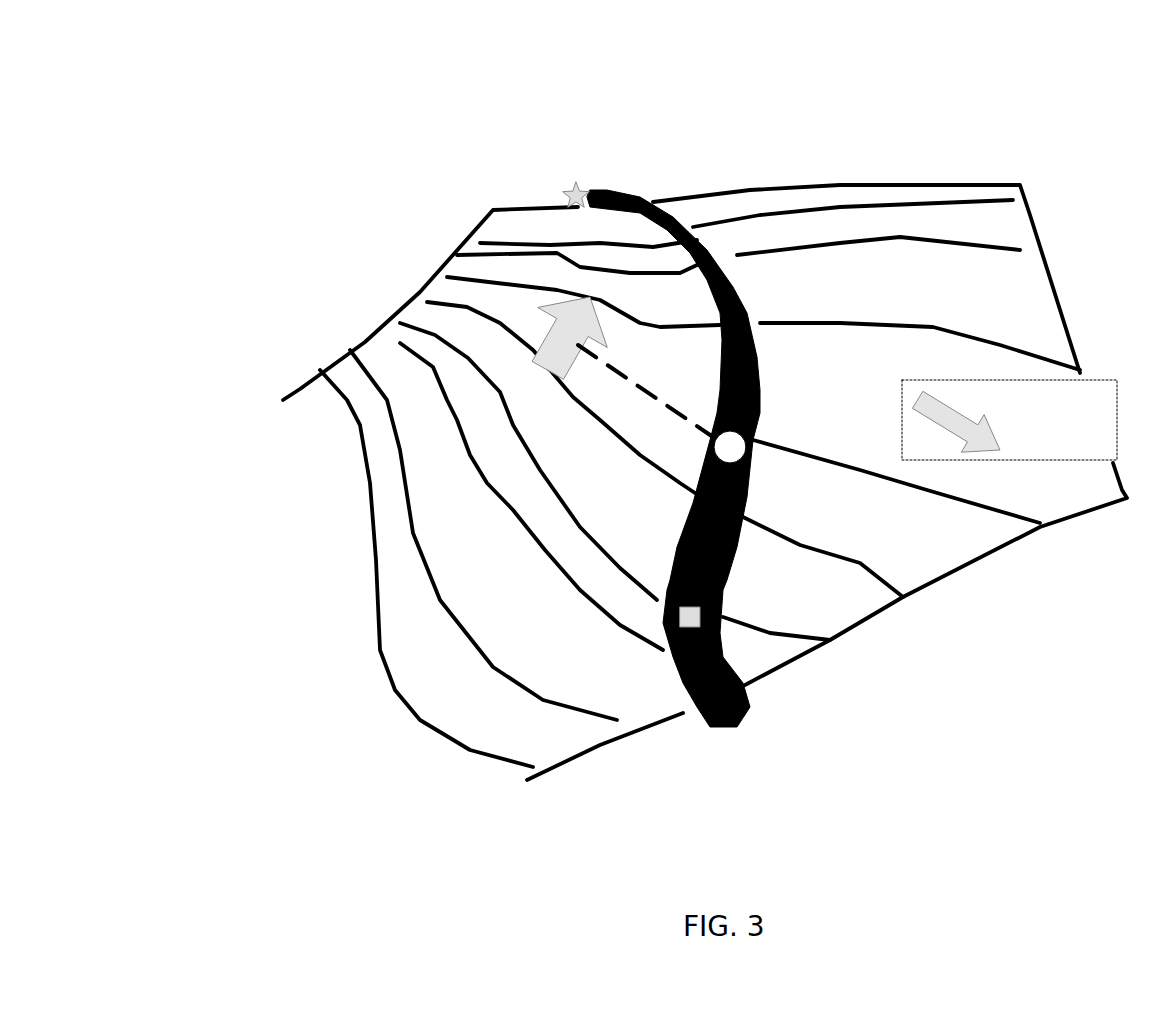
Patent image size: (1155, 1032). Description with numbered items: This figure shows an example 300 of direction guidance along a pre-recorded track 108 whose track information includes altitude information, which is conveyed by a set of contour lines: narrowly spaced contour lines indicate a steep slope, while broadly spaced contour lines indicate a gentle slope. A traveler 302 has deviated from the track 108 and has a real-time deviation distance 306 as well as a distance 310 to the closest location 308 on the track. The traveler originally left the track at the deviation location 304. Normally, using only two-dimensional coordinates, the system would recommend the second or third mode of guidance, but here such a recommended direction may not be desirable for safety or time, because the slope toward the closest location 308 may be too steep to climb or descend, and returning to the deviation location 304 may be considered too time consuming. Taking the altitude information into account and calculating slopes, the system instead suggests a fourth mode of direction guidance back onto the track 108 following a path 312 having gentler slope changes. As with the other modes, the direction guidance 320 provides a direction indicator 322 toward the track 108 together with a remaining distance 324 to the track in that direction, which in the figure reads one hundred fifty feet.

The map display 300 is at (274, 44).
The traveler 302 is at (569, 338).
The deviation location 304 is at (675, 612).
The real-time deviation distance 306 is at (668, 600).
The closest location on the track 308 is at (567, 190).
The distance to the closest location on the track 310 is at (575, 208).
The path 312 is at (645, 391).
The track 108 is at (748, 348).
The direction guidance 320 is at (928, 388).
The direction indicator 322 is at (934, 432).
The scale label 324 is at (1043, 436).